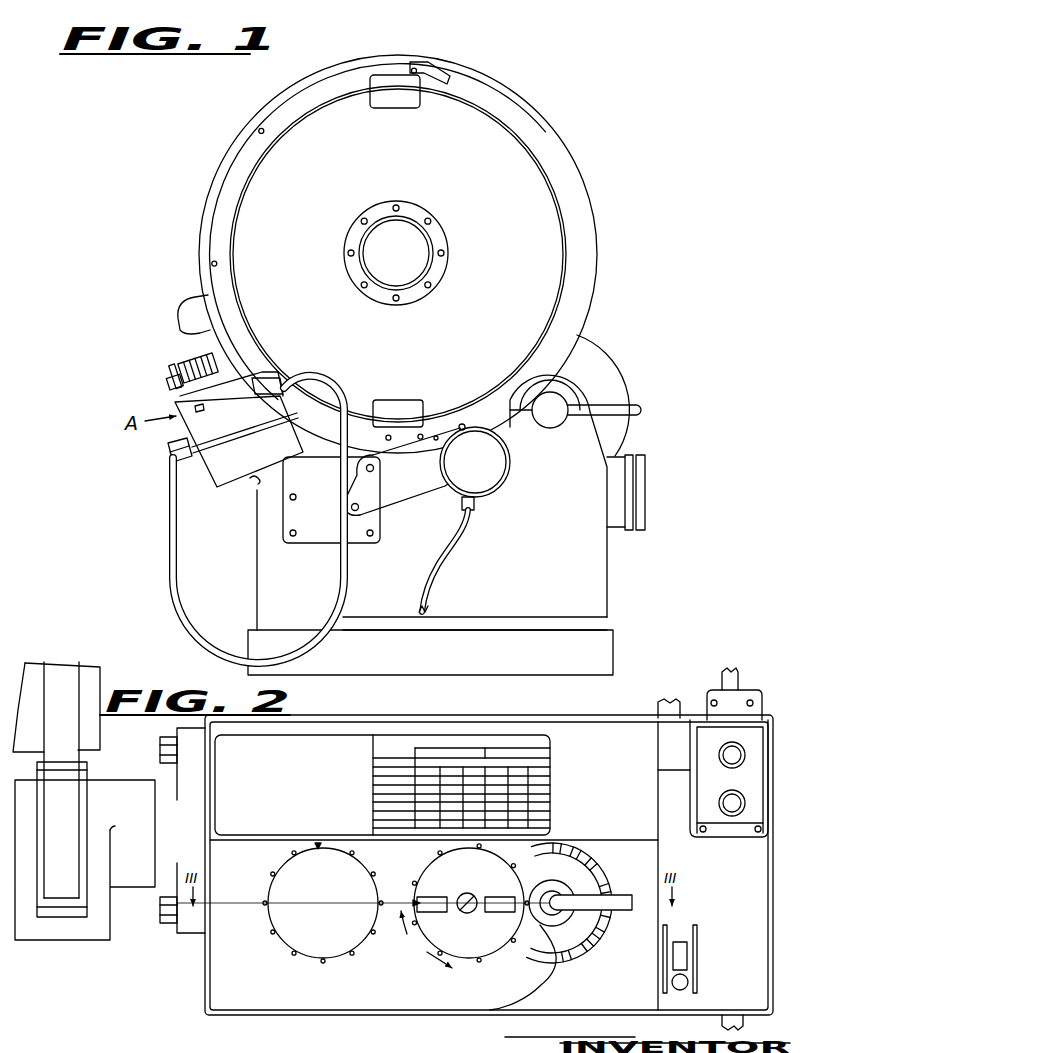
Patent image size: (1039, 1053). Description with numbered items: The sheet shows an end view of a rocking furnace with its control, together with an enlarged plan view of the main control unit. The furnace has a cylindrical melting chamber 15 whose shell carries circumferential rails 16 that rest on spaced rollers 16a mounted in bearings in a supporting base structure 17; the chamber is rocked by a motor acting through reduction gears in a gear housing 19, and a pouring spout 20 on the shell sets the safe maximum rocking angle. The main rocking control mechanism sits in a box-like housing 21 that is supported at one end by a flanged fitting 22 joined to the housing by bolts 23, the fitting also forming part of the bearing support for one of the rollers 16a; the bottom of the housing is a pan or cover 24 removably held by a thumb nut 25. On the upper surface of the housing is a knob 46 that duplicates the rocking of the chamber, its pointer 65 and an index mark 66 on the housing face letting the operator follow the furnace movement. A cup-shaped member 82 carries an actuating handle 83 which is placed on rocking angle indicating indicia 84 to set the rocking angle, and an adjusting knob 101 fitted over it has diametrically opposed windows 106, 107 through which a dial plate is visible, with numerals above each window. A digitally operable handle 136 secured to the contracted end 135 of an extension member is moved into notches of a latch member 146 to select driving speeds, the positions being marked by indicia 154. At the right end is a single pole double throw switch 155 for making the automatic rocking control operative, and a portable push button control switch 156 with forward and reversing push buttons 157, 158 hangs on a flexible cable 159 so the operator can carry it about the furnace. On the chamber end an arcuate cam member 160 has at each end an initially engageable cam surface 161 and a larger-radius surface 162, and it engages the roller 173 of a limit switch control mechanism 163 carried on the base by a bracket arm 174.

In FIG. 1, the melting chamber 15 is at (425, 253).
In FIG. 2, the melting chamber 15 is at (91, 694).
In FIG. 1, the rails 16 is at (560, 170).
In FIG. 2, the rails 16 is at (60, 684).
In FIG. 2, the rollers 16a is at (62, 880).
In FIG. 1, the supporting base structure 17 is at (595, 553).
In FIG. 1, the gear housing 19 is at (613, 391).
In FIG. 1, the pouring spout 20 is at (190, 303).
In FIG. 1, the box-like housing 21 is at (200, 435).
In FIG. 2, the flanged fitting 22 is at (166, 870).
In FIG. 2, the bolts 23 is at (172, 925).
In FIG. 1, the pan or cover 24 is at (215, 474).
In FIG. 1, the thumb nut 25 is at (258, 484).
In FIG. 2, the knob 46 is at (288, 853).
In FIG. 2, the pointer 65 is at (317, 845).
In FIG. 2, the index mark 66 is at (323, 846).
In FIG. 1, the cup-shaped member 82 is at (169, 390).
In FIG. 1, the actuating handle 83 is at (223, 370).
In FIG. 2, the actuating handle 83 is at (464, 882).
In FIG. 2, the rocking angle indicating indicia 84 is at (422, 864).
In FIG. 1, the adjusting knob 101 is at (174, 378).
In FIG. 2, the adjusting knob 101 is at (415, 894).
In FIG. 2, the window 106 is at (431, 914).
In FIG. 2, the window 107 is at (505, 914).
In FIG. 2, the contracted end 135 is at (554, 891).
In FIG. 1, the digitally operable handle 136 is at (200, 404).
In FIG. 2, the digitally operable handle 136 is at (624, 896).
In FIG. 2, the latch member 146 is at (603, 930).
In FIG. 2, the indicia 154 is at (603, 840).
In FIG. 2, the single pole double throw switch 155 is at (690, 941).
In FIG. 2, the portable push button control switch 156 is at (707, 740).
In FIG. 2, the forward push button 157 is at (736, 752).
In FIG. 2, the reversing push button 158 is at (732, 801).
In FIG. 1, the flexible cable 159 is at (178, 572).
In FIG. 2, the flexible cable 159 is at (734, 684).
In FIG. 1, the arcuate cam member 160 is at (232, 174).
In FIG. 1, the initially engageable cam surface 161 is at (446, 78).
In FIG. 1, the cam surface 162 is at (406, 64).
In FIG. 1, the limit switch control mechanism 163 is at (507, 472).
In FIG. 1, the roller 173 is at (463, 424).
In FIG. 1, the bracket arm 174 is at (413, 482).